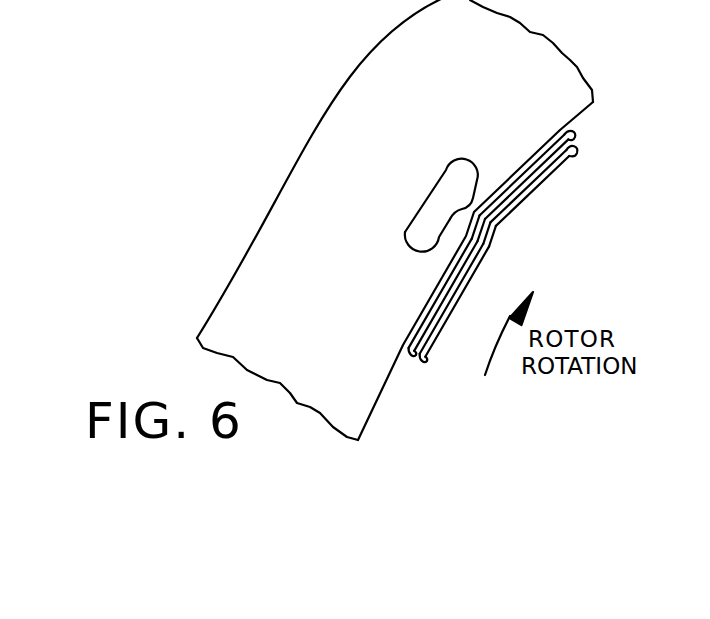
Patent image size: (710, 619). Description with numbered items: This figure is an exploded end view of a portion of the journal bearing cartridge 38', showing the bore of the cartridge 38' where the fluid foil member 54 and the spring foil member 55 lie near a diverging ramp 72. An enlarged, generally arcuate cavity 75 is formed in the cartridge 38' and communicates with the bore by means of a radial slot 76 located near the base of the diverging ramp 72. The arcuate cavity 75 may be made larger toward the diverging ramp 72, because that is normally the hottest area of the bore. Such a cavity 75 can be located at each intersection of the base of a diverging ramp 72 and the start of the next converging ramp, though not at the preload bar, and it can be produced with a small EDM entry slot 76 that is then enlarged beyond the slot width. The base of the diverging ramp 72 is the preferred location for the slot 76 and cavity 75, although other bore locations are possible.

The cartridge 38' is at (382, 220).
The arcuate cavity 75 is at (437, 191).
The radial slot 76 is at (475, 201).
The diverging ramp 72 is at (463, 236).
The spring foil member 55 is at (518, 191).
The fluid foil member 54 is at (512, 221).